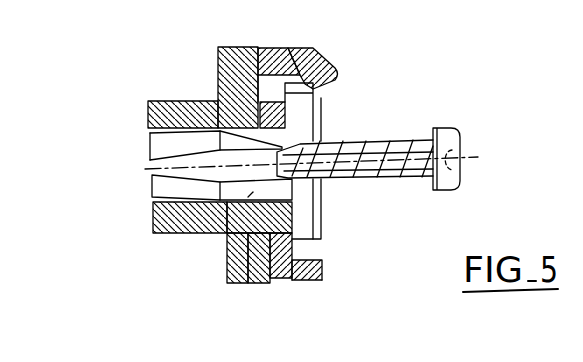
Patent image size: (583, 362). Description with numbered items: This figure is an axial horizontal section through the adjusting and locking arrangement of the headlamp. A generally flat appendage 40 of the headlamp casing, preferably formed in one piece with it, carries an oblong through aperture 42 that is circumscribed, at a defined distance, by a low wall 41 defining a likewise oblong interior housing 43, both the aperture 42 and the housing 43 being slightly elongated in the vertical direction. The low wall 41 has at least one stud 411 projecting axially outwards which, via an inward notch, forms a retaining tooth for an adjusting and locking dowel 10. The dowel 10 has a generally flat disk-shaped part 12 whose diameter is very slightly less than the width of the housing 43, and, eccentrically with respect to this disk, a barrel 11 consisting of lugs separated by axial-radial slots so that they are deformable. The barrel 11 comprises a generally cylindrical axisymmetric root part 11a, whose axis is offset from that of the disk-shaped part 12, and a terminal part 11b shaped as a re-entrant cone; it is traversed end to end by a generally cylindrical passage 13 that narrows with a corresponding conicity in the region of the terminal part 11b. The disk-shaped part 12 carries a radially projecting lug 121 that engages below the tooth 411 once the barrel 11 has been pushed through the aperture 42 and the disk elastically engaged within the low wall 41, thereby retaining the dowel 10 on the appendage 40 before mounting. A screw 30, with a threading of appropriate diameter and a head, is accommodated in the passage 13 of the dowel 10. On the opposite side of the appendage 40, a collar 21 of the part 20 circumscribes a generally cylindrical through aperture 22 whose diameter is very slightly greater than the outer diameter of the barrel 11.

The adjusting and locking dowel 10 is at (305, 119).
The barrel 11 is at (238, 140).
The root part 11a is at (248, 285).
The terminal part 11b is at (225, 166).
The disk-shaped part 12 is at (310, 220).
The passage 13 is at (173, 103).
The lug 121 is at (290, 62).
The base 20 is at (226, 260).
The collar 21 is at (188, 233).
The through aperture 22 is at (148, 138).
The screw 30 is at (397, 138).
The appendage 40 is at (283, 282).
The low wall 41 is at (313, 256).
The stud 411 is at (337, 66).
The oblong through aperture 42 is at (250, 195).
The interior housing 43 is at (298, 283).